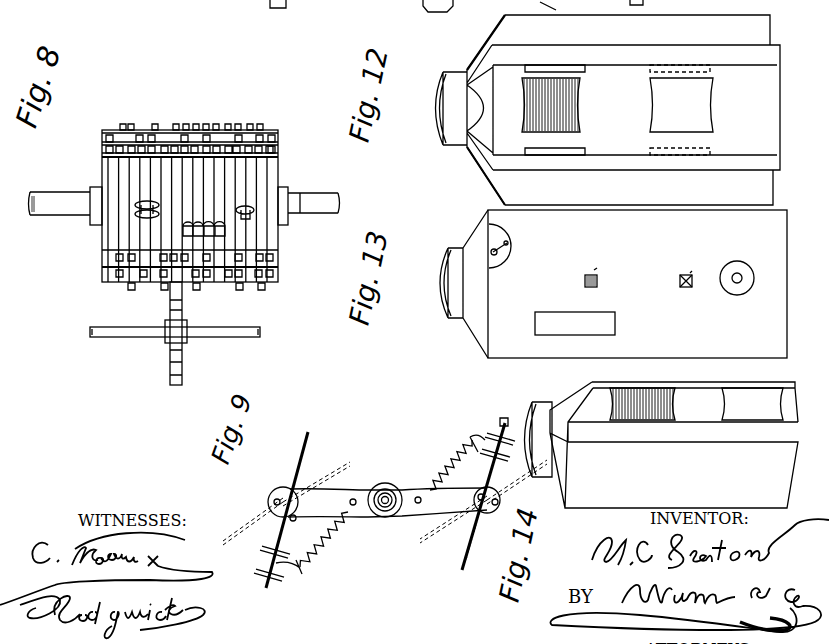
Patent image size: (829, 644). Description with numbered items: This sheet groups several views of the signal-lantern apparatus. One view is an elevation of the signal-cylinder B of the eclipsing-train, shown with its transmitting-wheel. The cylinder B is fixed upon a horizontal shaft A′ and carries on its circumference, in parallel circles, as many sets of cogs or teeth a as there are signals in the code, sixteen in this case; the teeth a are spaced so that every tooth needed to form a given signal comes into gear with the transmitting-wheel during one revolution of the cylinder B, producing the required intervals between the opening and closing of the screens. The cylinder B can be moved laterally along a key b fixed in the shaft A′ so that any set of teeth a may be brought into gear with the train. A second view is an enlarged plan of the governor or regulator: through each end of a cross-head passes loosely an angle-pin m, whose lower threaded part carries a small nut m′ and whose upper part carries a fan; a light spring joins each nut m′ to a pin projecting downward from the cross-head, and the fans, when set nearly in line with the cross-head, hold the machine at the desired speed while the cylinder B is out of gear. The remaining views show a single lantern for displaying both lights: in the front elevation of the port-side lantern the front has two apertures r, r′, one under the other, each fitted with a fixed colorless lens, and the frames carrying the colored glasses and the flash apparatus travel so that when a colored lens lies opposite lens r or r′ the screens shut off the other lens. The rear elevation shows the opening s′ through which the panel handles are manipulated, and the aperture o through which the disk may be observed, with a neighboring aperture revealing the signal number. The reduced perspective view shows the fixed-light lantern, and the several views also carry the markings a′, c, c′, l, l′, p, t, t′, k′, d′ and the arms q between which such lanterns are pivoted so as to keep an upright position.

In FIG. 8, the cogs or teeth a is at (240, 300).
In FIG. 8, the end pin a′ is at (278, 150).
In FIG. 8, the horizontal shaft A′ is at (288, 192).
In FIG. 8, the key b is at (326, 196).
In FIG. 8, the signal-cylinder B is at (210, 204).
In FIG. 8, the vertical shaft c is at (170, 356).
In FIG. 8, the cross shaft c′ is at (122, 338).
In FIG. 9, the lever l is at (380, 486).
In FIG. 9, the lever hub l′ is at (398, 490).
In FIG. 9, the angle-pin m is at (463, 520).
In FIG. 9, the nut m′ is at (490, 514).
In FIG. 12, the feed box body p is at (560, 156).
In FIG. 12, the aperture r is at (582, 100).
In FIG. 12, the aperture r′ is at (714, 98).
In FIG. 13, the box casing t is at (664, 362).
In FIG. 14, the box casing t is at (668, 392).
In FIG. 14, the box window t′ is at (752, 388).
In FIG. 13, the opening s′ is at (565, 322).
In FIG. 13, the grated opening k′ is at (585, 275).
In FIG. 13, the aperture o is at (596, 274).
In FIG. 13, the arm q is at (692, 275).
In FIG. 13, the shaft bearing d′ is at (740, 296).